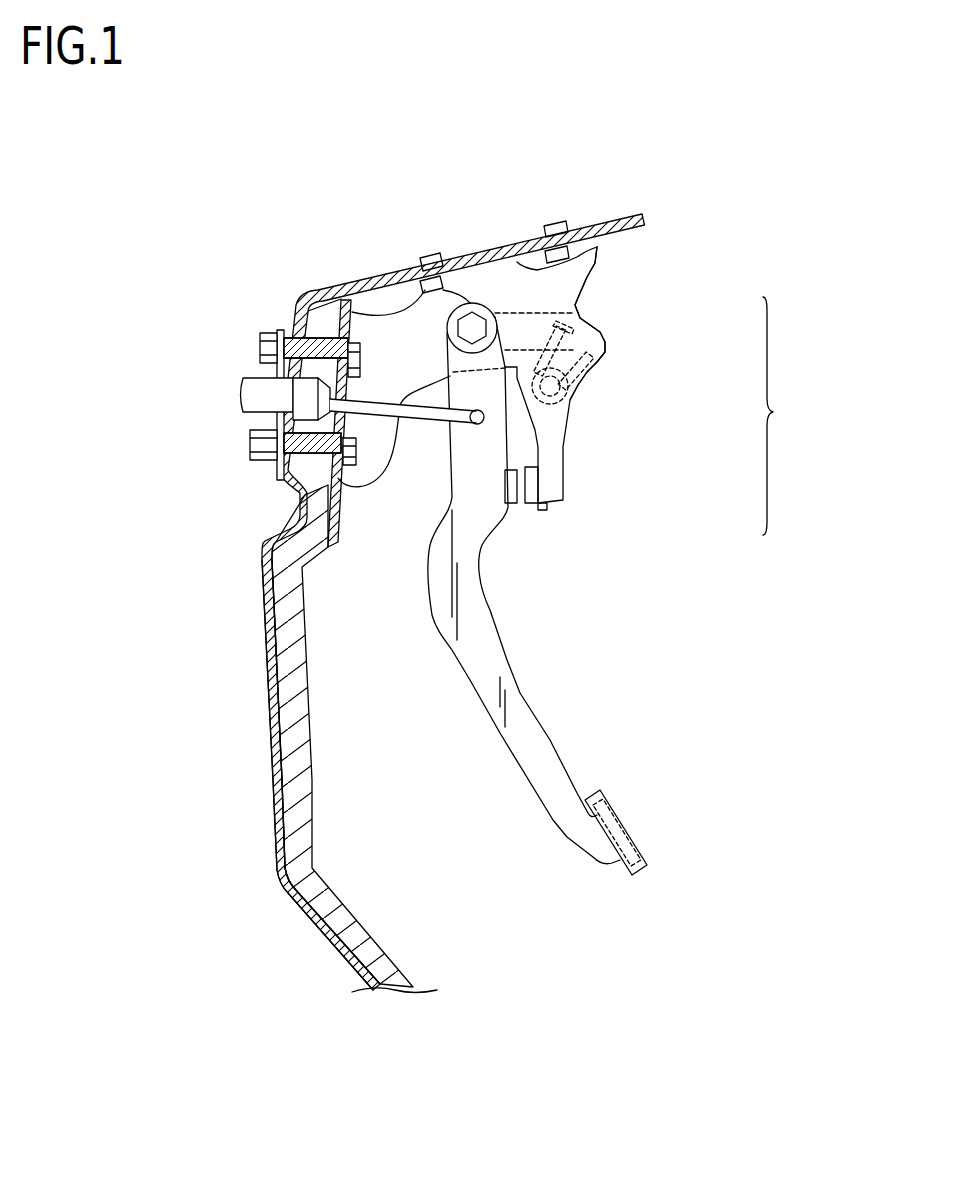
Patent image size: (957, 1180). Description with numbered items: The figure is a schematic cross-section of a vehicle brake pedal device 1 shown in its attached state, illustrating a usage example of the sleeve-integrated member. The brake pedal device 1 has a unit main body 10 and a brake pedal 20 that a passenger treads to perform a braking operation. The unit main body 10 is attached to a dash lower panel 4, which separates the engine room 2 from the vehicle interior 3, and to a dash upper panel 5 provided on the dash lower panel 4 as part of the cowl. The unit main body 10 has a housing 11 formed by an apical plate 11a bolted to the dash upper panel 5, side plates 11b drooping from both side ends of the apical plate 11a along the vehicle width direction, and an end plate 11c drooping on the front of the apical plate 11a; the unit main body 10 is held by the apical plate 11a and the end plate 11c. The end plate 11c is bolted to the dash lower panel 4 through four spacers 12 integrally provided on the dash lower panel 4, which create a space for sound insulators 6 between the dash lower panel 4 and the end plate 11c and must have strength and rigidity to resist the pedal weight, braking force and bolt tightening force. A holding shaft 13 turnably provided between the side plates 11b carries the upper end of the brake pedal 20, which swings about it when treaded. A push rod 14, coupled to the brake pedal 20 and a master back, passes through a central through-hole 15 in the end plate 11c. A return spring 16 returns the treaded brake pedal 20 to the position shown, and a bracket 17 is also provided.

The brake pedal device 1 is at (778, 425).
The engine room 2 is at (112, 641).
The vehicle interior 3 is at (818, 641).
The dash lower panel 4 is at (268, 718).
The dash upper panel 5 is at (348, 286).
The sound insulator 6 is at (305, 742).
The unit main body 10 is at (670, 335).
The housing 11 is at (501, 390).
The apical plate 11a is at (587, 262).
The side plate 11b is at (563, 292).
The end plate 11c is at (338, 516).
The spacer 12 is at (312, 340).
The holding shaft 13 is at (468, 316).
The push rod 14 is at (388, 399).
The through-hole 15 is at (347, 424).
The return spring 16 is at (598, 378).
The bracket 17 is at (580, 313).
The brake pedal 20 is at (565, 692).